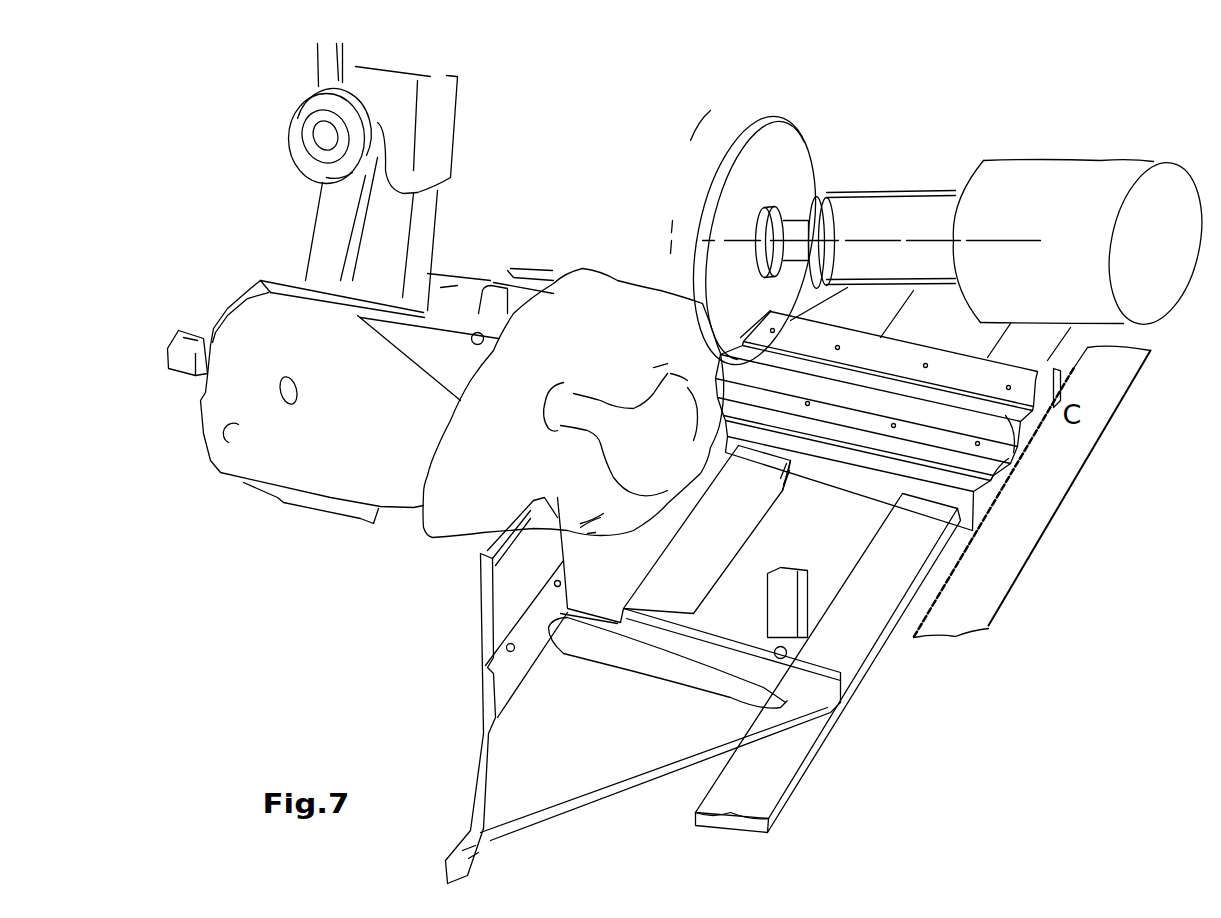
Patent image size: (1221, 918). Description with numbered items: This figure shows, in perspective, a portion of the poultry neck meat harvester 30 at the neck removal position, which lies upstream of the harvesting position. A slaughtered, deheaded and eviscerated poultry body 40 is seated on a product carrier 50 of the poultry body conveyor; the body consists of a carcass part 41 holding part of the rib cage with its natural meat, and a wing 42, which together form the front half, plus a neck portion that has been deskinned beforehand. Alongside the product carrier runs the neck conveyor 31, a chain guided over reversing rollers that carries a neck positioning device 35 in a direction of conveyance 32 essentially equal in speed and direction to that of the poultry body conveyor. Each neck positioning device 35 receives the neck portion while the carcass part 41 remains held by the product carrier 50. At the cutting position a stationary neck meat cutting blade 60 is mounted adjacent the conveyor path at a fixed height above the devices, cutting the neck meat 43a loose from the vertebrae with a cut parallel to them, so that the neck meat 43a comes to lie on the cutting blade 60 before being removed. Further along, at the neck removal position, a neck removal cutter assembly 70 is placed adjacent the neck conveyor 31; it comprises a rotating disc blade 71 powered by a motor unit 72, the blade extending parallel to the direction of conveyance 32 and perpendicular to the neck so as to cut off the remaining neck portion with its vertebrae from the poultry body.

The neck meat harvester 30 is at (897, 670).
The neck conveyor 31 is at (906, 324).
The direction of conveyance 32 is at (1040, 632).
The neck positioning device 35 is at (1027, 473).
The poultry body 40 is at (604, 260).
The carcass part 41 is at (601, 383).
The wing 42 is at (629, 430).
The neck meat 43a is at (668, 663).
The product carrier 50 is at (313, 535).
The neck meat cutting blade 60 is at (643, 691).
The neck removal cutter assembly 70 is at (944, 224).
The rotating disc blade 71 is at (755, 240).
The motor unit 72 is at (1083, 243).